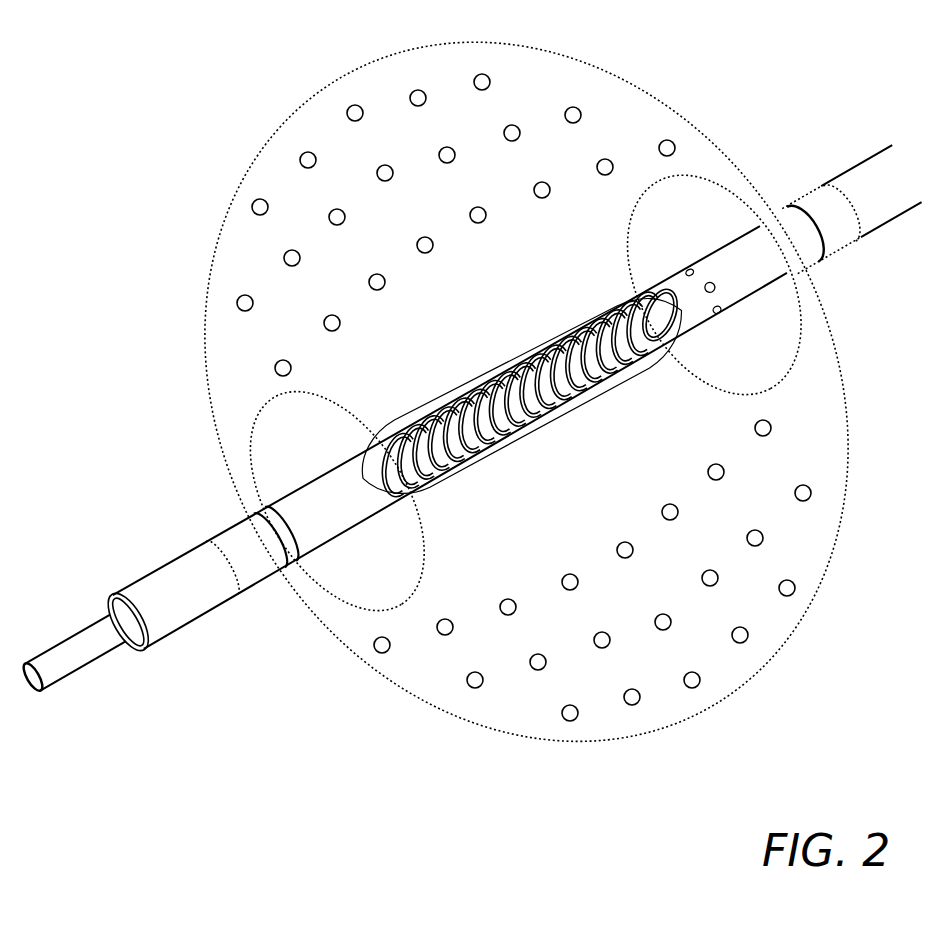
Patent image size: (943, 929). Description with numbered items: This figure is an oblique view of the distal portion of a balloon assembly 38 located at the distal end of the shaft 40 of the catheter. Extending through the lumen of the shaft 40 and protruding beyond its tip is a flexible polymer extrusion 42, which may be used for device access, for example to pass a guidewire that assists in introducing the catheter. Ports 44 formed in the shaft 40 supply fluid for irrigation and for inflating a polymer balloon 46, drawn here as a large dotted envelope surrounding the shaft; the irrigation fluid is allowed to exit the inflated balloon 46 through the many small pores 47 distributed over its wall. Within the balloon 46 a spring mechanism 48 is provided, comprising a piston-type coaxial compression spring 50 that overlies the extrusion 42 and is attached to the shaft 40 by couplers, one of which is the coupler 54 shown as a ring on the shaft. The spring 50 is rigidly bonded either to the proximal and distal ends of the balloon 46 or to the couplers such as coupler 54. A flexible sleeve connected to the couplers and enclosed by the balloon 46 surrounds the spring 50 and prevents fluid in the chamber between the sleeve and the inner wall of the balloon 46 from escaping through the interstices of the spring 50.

The balloon assembly 38 is at (204, 49).
The shaft 40 is at (895, 220).
The flexible polymer extrusion 42 is at (83, 628).
The ports 44 is at (711, 281).
The polymer balloon 46 is at (241, 178).
The small pores 47 is at (605, 159).
The spring mechanism 48 is at (431, 368).
The piston-type coaxial compression spring 50 is at (583, 407).
The coupler 54 is at (247, 512).